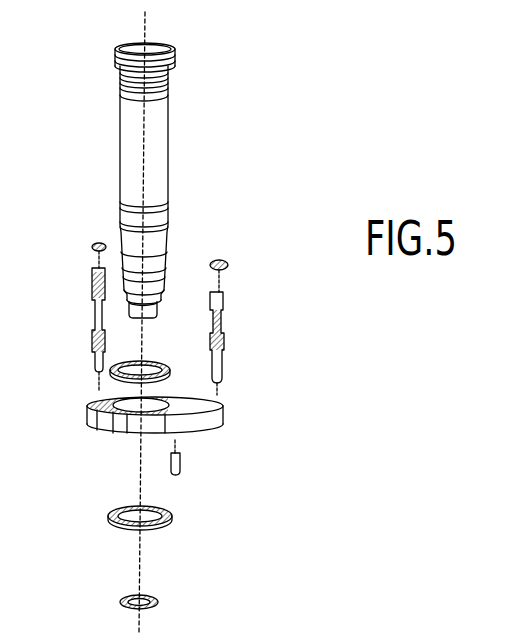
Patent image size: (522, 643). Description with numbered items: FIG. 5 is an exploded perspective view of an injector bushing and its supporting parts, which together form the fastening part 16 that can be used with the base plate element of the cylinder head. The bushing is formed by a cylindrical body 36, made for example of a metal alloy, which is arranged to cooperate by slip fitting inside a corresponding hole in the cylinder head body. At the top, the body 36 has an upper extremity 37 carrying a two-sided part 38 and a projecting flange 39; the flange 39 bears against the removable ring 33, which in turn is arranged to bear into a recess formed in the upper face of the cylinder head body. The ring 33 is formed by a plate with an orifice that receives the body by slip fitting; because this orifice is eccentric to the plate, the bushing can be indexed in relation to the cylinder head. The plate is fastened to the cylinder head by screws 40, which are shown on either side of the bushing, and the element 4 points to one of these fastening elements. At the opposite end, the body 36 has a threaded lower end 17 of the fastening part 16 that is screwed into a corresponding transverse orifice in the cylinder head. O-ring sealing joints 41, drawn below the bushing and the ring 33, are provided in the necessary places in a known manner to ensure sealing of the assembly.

The fastener 4 is at (222, 263).
The fastening part 16 is at (116, 162).
The lower end 17 is at (163, 305).
The ring 33 is at (205, 425).
The cylindrical body 36 is at (161, 152).
The upper extremity 37 is at (196, 83).
The two-sided part 38 is at (118, 86).
The projecting flange 39 is at (115, 62).
The screws 40 is at (93, 312).
The O-ring sealing joints 41 is at (156, 362).